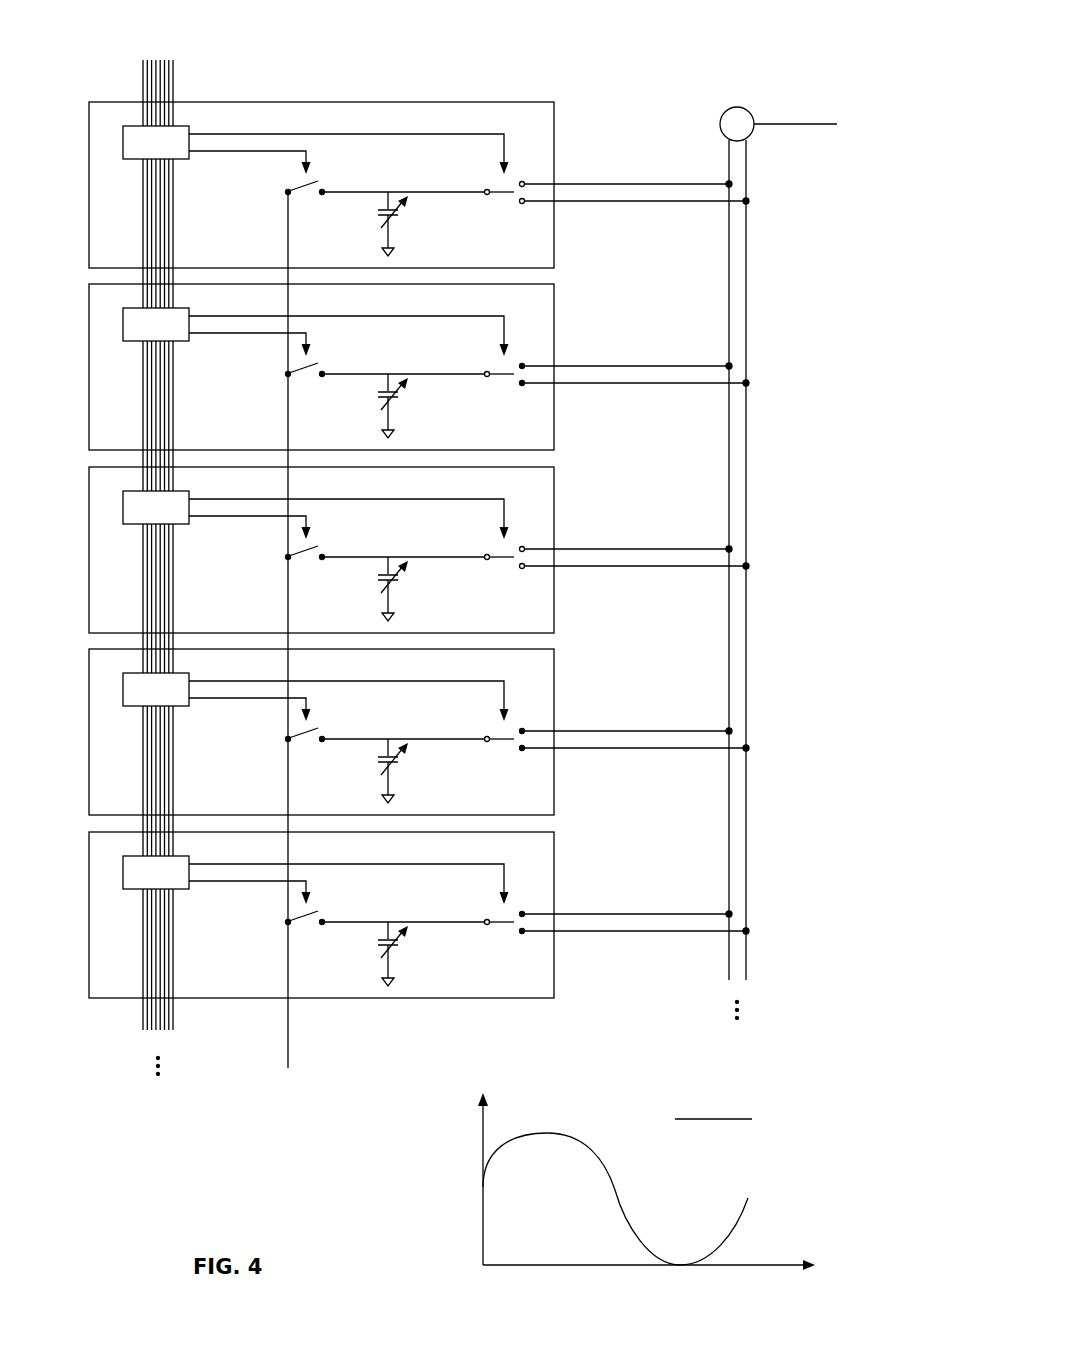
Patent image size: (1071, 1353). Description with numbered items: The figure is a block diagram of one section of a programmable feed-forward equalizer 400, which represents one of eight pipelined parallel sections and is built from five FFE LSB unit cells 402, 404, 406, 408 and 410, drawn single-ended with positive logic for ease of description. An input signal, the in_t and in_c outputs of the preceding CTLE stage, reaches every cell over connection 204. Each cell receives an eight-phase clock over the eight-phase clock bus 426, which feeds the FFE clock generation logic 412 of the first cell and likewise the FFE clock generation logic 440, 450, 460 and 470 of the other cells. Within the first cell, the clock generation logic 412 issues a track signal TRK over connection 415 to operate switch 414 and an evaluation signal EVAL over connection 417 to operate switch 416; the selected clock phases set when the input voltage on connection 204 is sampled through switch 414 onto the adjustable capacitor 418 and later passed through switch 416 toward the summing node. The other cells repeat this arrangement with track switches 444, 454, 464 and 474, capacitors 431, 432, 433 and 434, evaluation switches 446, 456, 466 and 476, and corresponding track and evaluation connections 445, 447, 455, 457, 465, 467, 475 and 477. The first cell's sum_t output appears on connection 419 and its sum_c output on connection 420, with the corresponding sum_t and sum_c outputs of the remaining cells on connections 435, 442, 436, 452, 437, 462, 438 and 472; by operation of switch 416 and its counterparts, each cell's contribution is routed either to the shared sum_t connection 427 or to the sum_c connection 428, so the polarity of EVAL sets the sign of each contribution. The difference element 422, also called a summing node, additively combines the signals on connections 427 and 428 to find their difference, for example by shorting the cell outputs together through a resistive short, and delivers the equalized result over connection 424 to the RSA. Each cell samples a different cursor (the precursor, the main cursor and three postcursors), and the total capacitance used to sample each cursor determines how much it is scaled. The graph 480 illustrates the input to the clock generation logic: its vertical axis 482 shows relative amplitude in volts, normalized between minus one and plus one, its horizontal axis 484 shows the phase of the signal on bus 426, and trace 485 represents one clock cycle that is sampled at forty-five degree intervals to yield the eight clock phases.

The programmable FFE section 400 is at (128, 14).
The 8-phase clock bus 426 is at (186, 85).
The connection 204 is at (288, 1035).
The FFE LSB unit cell 402 is at (546, 259).
The FFE LSB unit cell 404 is at (321, 367).
The FFE LSB unit cell 406 is at (321, 550).
The FFE LSB unit cell 408 is at (321, 732).
The FFE LSB unit cell 410 is at (321, 915).
The FFE clock generation logic 412 is at (123, 143).
The switch 414 is at (284, 181).
The connection 415 is at (308, 155).
The switch 416 is at (530, 163).
The connection 417 is at (313, 134).
The capacitor 418 is at (399, 218).
The connection 419 is at (600, 184).
The connection 420 is at (587, 203).
The difference element 422 is at (737, 107).
The connection 424 is at (770, 125).
The connection 427 is at (729, 230).
The connection 428 is at (746, 260).
The FFE clock generation logic 440 is at (143, 343).
The switch 444 is at (374, 381).
The TRK signal 445 is at (282, 343).
The switch 446 is at (566, 346).
The EVAL signal 447 is at (349, 323).
The capacitor 431 is at (388, 406).
The sum_t line 435 is at (628, 352).
The sum_c line 442 is at (674, 390).
The FFE clock generation logic 450 is at (143, 524).
The switch 454 is at (374, 564).
The TRK signal 455 is at (282, 526).
The switch 456 is at (561, 531).
The EVAL signal 457 is at (349, 506).
The capacitor 432 is at (388, 589).
The sum_t line 436 is at (628, 531).
The sum_c line 452 is at (671, 575).
The FFE clock generation logic 460 is at (143, 707).
The switch 464 is at (374, 746).
The TRK signal 465 is at (282, 708).
The switch 466 is at (566, 715).
The EVAL signal 467 is at (349, 688).
The capacitor 433 is at (388, 771).
The sum_t line 437 is at (628, 715).
The sum_c line 462 is at (671, 757).
The FFE clock generation logic 470 is at (143, 889).
The switch 474 is at (374, 929).
The TRK signal 475 is at (282, 891).
The switch 476 is at (564, 896).
The EVAL signal 477 is at (349, 871).
The capacitor 434 is at (388, 954).
The sum_t line 438 is at (628, 896).
The sum_c line 472 is at (674, 939).
The graph 480 is at (497, 1084).
The vertical axis 482 is at (483, 1215).
The horizontal axis 484 is at (777, 1265).
The trace 485 is at (553, 1133).